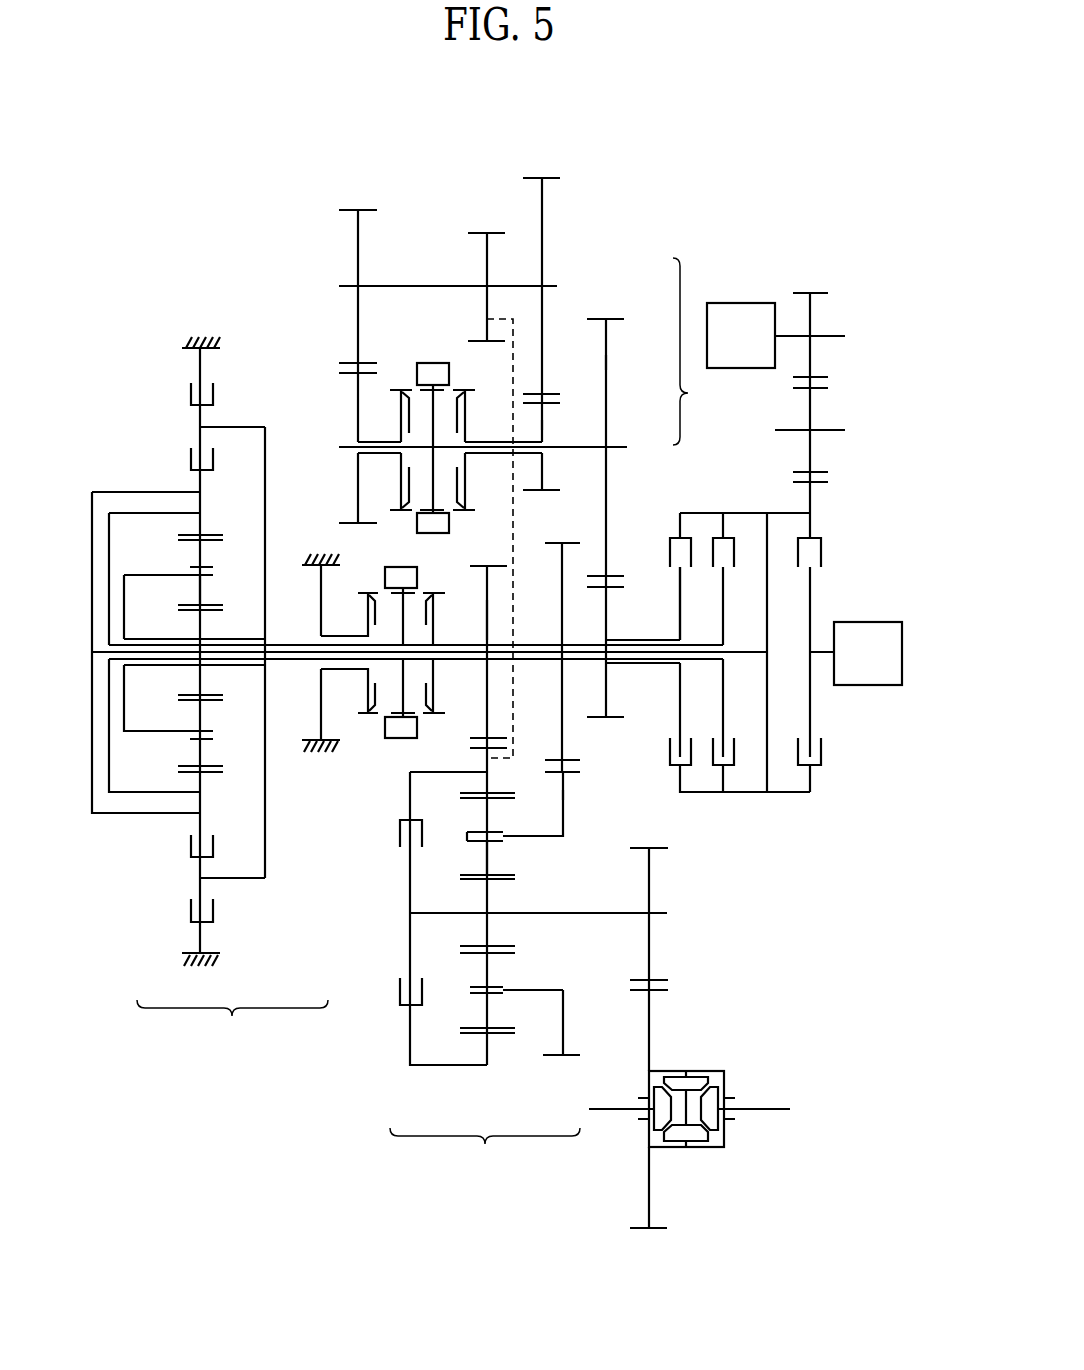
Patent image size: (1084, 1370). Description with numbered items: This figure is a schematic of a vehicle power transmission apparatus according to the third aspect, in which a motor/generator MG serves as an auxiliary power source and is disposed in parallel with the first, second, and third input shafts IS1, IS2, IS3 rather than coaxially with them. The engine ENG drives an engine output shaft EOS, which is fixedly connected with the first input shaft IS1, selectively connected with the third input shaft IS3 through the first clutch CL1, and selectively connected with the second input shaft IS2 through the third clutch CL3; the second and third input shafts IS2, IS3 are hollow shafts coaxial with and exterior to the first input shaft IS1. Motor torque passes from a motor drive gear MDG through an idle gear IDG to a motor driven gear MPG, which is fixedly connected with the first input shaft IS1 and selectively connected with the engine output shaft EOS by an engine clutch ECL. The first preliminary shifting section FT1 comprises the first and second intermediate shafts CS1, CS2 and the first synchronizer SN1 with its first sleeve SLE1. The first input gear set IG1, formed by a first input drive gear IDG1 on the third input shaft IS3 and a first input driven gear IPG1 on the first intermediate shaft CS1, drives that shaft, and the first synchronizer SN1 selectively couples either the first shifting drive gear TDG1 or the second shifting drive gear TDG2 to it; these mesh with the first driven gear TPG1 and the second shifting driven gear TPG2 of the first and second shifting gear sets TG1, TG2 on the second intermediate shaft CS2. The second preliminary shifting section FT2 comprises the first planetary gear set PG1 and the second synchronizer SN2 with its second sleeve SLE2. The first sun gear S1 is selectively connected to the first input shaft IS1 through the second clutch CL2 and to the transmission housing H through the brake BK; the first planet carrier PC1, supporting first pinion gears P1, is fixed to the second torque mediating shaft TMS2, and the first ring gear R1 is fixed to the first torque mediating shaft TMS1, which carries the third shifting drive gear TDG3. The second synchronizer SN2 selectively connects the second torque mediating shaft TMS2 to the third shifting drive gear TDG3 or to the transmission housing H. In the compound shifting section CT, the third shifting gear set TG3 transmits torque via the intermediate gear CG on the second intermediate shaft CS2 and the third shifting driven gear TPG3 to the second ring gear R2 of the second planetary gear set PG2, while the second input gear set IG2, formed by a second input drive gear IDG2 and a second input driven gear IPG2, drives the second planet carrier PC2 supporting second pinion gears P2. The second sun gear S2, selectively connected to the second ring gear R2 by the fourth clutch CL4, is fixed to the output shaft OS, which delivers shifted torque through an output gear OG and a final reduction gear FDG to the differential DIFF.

The first shifting gear set TG1 is at (554, 161).
The second shifting gear set TG2 is at (369, 194).
The third shifting gear set TG3 is at (484, 556).
The first driven gear TPG1 is at (542, 213).
The second shifting driven gear TPG2 is at (358, 252).
The third shifting driven gear TPG3 is at (487, 757).
The first shifting drive gear TDG1 is at (542, 425).
The second shifting drive gear TDG2 is at (358, 407).
The third shifting drive gear TDG3 is at (487, 620).
The intermediate gear CG is at (487, 260).
The first intermediate shaft CS1 is at (557, 490).
The second intermediate shaft CS2 is at (425, 286).
The first synchronizer SN1 is at (422, 356).
The second synchronizer SN2 is at (362, 745).
The first sleeve SLE1 is at (440, 363).
The second sleeve SLE2 is at (400, 567).
The transmission housing H is at (197, 338).
The brake BK is at (180, 391).
The first clutch CL1 is at (667, 532).
The second clutch CL2 is at (180, 450).
The third clutch CL3 is at (711, 532).
The fourth clutch CL4 is at (392, 998).
The engine clutch ECL is at (830, 552).
The first planetary gear set PG1 is at (170, 552).
The second planetary gear set PG2 is at (456, 1040).
The first ring gear R1 is at (205, 535).
The second ring gear R2 is at (460, 795).
The first pinion gears P1 is at (200, 591).
The second pinion gears P2 is at (487, 858).
The first sun gear S1 is at (200, 614).
The second sun gear S2 is at (487, 895).
The first planet carrier PC1 is at (152, 576).
The second planet carrier PC2 is at (543, 837).
The first torque mediating shaft TMS1 is at (294, 661).
The second torque mediating shaft TMS2 is at (294, 642).
The first input shaft IS1 is at (538, 652).
The second input shaft IS2 is at (657, 664).
The third input shaft IS3 is at (657, 640).
The first input gear set IG1 is at (611, 304).
The second input gear set IG2 is at (579, 804).
The first input driven gear IPG1 is at (606, 362).
The second input driven gear IPG2 is at (563, 788).
The first input drive gear IDG1 is at (607, 613).
The second input drive gear IDG2 is at (560, 587).
The first preliminary shifting section FT1 is at (701, 351).
The second preliminary shifting section FT2 is at (232, 944).
The motor/generator MG is at (776, 335).
The motor drive gear MDG is at (810, 317).
The idle gear IDG is at (810, 410).
The motor driven gear MPG is at (810, 497).
The engine ENG is at (868, 653).
The engine output shaft EOS is at (810, 592).
The output shaft OS is at (597, 913).
The output gear OG is at (649, 945).
The final reduction gear FDG is at (649, 1020).
The differential DIFF is at (739, 1077).
The compound shifting section CT is at (485, 1153).